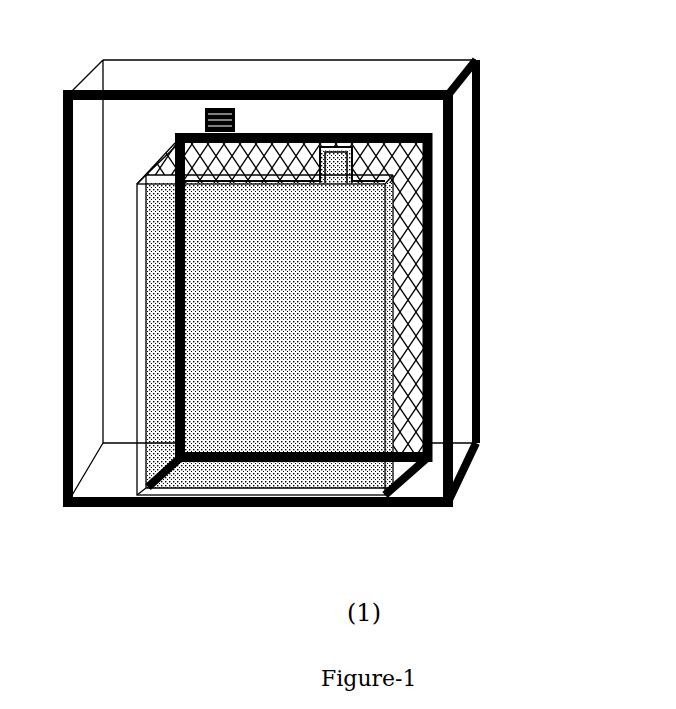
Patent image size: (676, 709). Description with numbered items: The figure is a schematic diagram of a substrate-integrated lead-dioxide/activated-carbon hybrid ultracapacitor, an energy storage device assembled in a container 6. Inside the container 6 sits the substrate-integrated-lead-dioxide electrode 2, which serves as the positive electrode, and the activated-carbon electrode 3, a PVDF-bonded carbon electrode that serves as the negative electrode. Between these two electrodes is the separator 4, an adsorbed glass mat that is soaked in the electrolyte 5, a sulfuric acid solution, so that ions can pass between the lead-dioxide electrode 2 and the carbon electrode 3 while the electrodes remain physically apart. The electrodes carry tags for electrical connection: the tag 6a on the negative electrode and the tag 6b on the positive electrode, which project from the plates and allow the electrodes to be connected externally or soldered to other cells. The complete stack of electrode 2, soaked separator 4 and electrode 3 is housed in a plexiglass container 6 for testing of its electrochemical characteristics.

The substrate-integrated-lead-dioxide electrode 2 is at (387, 204).
The activated-carbon electrode 3 is at (432, 333).
The separator 4 is at (354, 300).
The electrolyte 5 is at (408, 263).
The container 6 is at (480, 369).
The tag of the negative electrode 6a is at (235, 108).
The tag of the positive electrode 6b is at (352, 162).